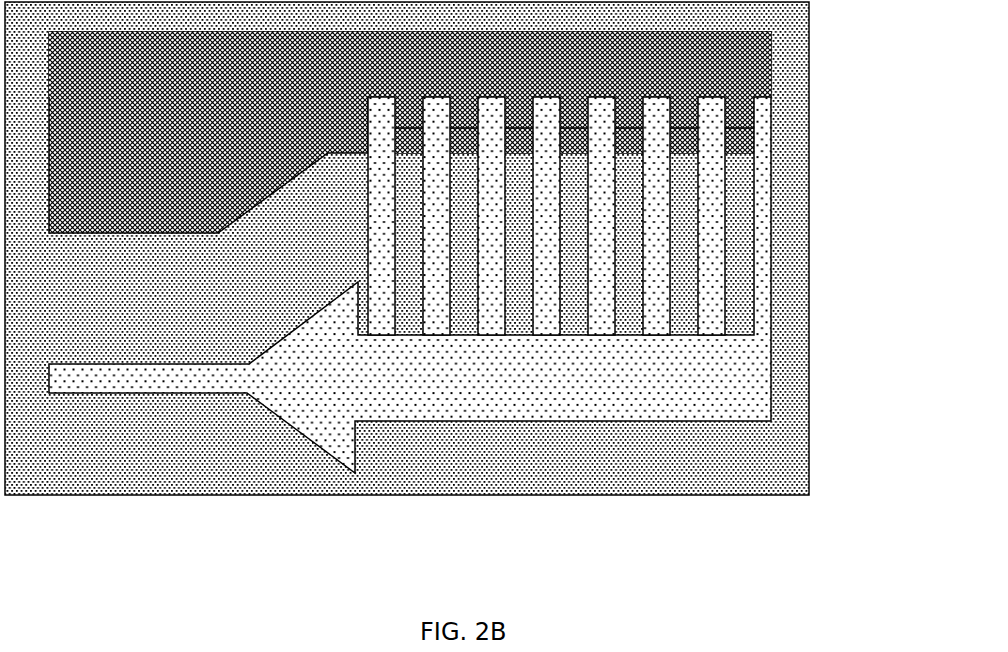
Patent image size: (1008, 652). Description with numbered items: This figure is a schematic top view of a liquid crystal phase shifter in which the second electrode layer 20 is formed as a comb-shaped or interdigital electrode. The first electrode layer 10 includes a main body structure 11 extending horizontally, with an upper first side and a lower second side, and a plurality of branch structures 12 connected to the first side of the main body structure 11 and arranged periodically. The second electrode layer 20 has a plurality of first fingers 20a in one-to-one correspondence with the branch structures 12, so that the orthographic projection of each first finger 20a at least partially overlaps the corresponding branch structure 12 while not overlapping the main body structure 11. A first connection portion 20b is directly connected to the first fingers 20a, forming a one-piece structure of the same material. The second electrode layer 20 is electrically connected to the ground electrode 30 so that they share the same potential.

The ground electrode 30 is at (627, 455).
The second electrode layer 20 is at (468, 132).
The first fingers 20a is at (622, 110).
The first connection portion 20b is at (590, 66).
The first electrode layer 10 is at (480, 285).
The main body structure 11 is at (757, 360).
The branch structures 12 is at (740, 232).